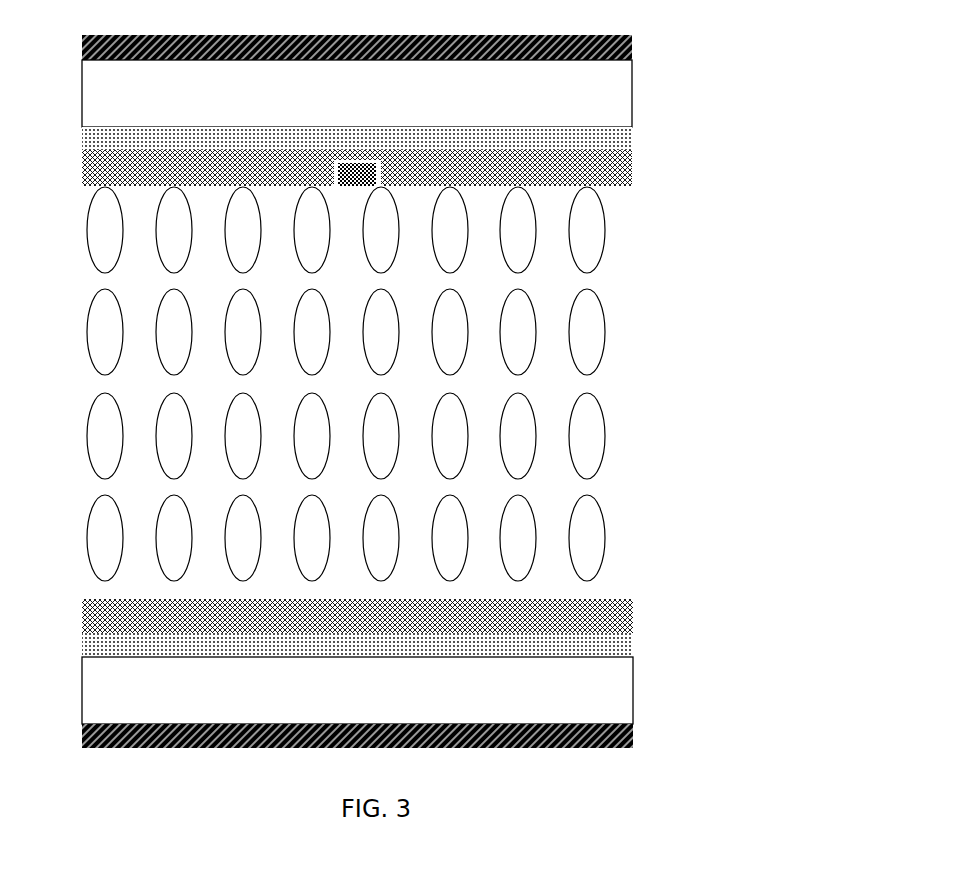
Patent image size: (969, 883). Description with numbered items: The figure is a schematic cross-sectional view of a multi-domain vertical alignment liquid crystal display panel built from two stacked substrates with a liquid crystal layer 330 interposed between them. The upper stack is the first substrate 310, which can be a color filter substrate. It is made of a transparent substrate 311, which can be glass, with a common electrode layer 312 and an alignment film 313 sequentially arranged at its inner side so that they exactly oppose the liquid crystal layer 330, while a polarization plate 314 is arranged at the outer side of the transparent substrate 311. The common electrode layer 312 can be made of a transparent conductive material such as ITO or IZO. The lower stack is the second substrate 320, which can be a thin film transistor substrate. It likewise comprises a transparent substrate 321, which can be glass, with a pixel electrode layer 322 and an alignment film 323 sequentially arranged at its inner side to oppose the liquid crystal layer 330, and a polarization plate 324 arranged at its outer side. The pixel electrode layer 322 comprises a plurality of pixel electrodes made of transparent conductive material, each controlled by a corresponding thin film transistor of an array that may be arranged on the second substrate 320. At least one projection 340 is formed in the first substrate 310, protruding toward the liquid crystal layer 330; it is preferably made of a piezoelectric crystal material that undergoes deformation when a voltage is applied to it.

The first substrate 310 is at (463, 111).
The transparent substrate 311 is at (610, 97).
The common electrode layer 312 is at (632, 141).
The alignment film 313 is at (407, 179).
The polarization plate 314 is at (632, 48).
The second substrate 320 is at (472, 671).
The transparent substrate 321 is at (625, 677).
The pixel electrode layer 322 is at (633, 650).
The alignment film 323 is at (633, 617).
The polarization plate 324 is at (414, 730).
The liquid crystal layer 330 is at (633, 214).
The projection 340 is at (355, 188).